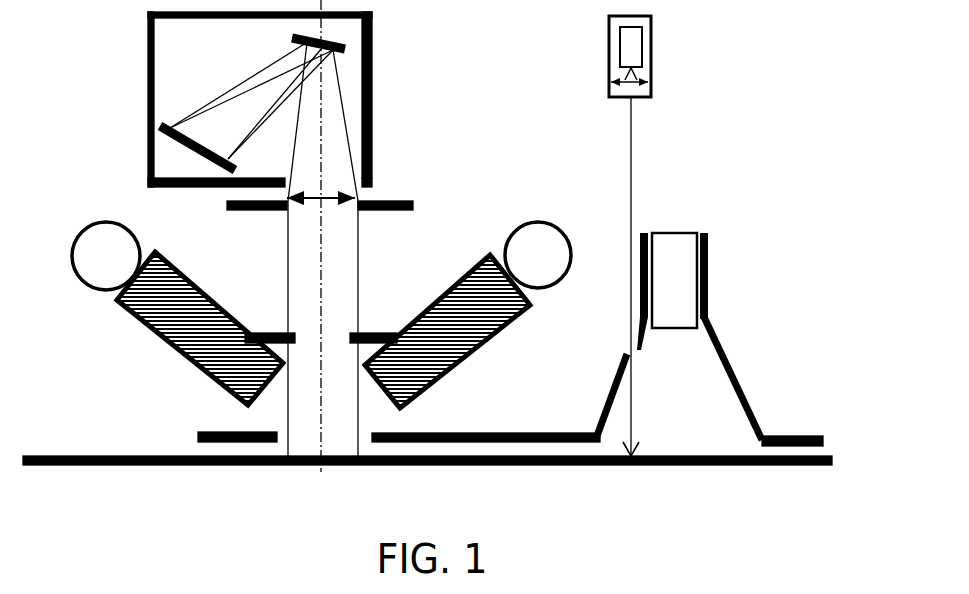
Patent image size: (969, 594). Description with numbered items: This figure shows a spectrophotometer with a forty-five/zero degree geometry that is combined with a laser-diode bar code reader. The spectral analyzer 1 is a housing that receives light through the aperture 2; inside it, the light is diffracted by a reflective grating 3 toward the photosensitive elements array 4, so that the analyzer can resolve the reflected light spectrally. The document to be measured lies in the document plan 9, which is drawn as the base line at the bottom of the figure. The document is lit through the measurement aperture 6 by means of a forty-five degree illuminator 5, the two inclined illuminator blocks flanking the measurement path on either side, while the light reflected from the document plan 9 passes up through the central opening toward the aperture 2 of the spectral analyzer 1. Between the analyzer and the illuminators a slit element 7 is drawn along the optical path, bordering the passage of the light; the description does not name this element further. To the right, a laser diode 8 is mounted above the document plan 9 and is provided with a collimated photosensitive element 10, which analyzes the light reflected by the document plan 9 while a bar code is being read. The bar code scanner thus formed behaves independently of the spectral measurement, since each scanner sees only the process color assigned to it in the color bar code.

The spectral analyzer 1 is at (368, 128).
The aperture 2 is at (363, 177).
The reflective grating 3 is at (345, 45).
The photosensitive elements array 4 is at (185, 141).
The 45° illuminator 5 is at (117, 263).
The measurement aperture 6 is at (350, 435).
The slit diaphragm 7 is at (287, 198).
The laser diode 8 is at (630, 50).
The document plan 9 is at (170, 455).
The collimated photosensitive element 10 is at (678, 280).